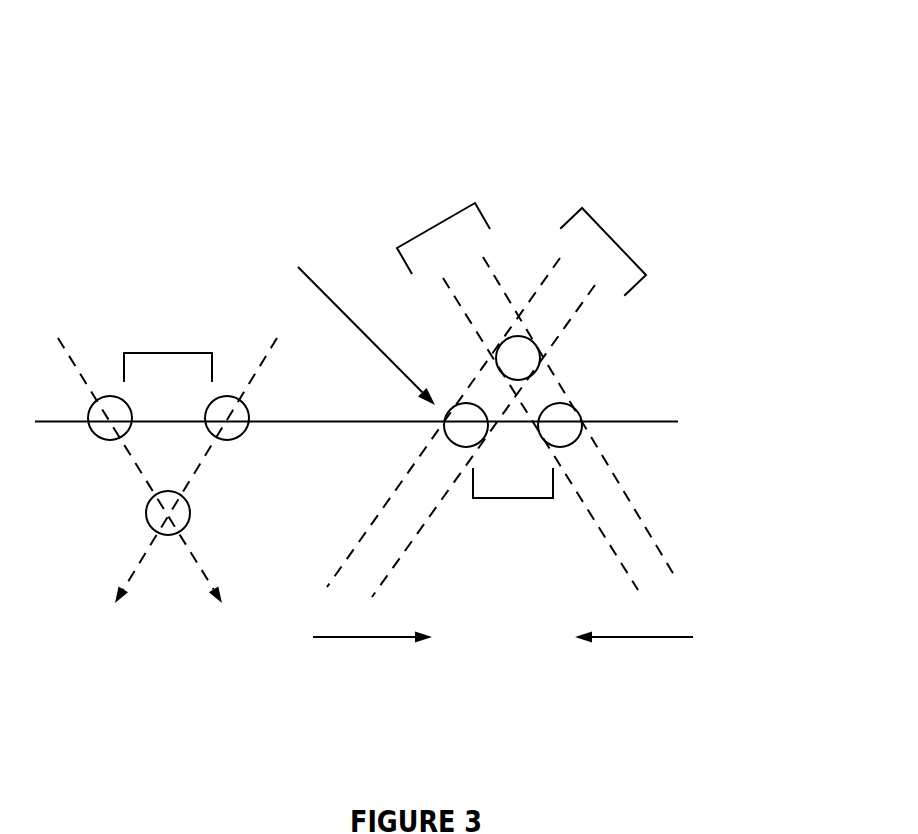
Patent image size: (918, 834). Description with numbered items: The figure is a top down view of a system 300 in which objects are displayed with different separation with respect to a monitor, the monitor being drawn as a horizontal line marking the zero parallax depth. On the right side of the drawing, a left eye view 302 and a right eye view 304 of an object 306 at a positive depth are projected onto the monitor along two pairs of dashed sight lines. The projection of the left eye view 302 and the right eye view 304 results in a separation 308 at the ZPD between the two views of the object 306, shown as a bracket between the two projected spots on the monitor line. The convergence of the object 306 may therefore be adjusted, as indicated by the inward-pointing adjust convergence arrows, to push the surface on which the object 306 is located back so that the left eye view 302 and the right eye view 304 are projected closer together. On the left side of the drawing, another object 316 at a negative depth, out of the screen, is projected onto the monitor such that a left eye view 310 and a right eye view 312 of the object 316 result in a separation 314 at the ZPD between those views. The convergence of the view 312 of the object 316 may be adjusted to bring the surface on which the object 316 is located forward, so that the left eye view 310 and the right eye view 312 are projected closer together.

The system 300 is at (739, 76).
The left eye view 302 is at (537, 393).
The right eye view 304 is at (486, 400).
The object 306 is at (576, 361).
The separation 308 is at (513, 466).
The left eye view 310 is at (66, 444).
The right eye view 312 is at (258, 456).
The separation 314 is at (168, 355).
The object 316 is at (116, 514).